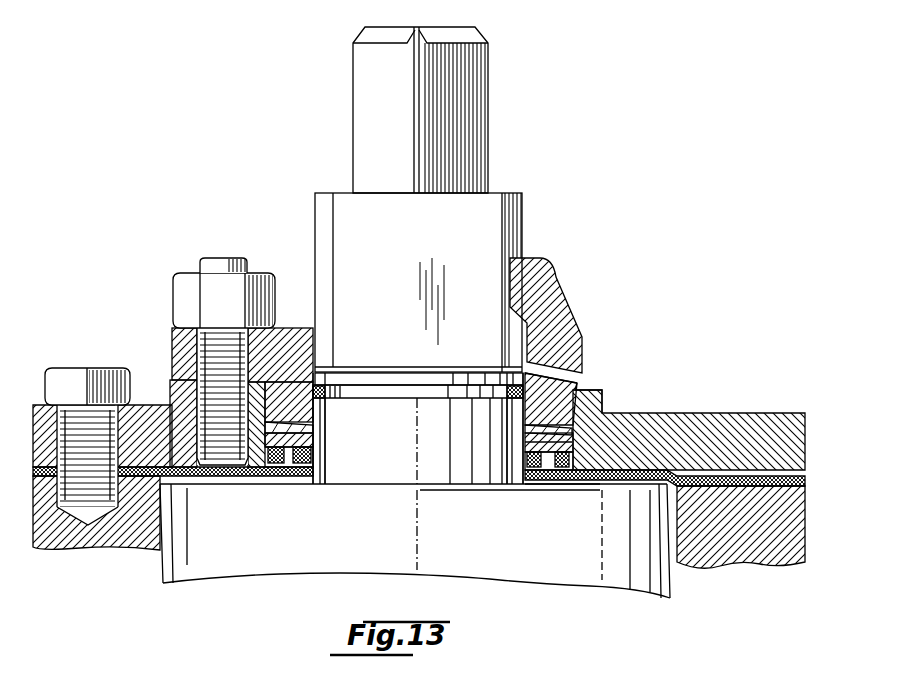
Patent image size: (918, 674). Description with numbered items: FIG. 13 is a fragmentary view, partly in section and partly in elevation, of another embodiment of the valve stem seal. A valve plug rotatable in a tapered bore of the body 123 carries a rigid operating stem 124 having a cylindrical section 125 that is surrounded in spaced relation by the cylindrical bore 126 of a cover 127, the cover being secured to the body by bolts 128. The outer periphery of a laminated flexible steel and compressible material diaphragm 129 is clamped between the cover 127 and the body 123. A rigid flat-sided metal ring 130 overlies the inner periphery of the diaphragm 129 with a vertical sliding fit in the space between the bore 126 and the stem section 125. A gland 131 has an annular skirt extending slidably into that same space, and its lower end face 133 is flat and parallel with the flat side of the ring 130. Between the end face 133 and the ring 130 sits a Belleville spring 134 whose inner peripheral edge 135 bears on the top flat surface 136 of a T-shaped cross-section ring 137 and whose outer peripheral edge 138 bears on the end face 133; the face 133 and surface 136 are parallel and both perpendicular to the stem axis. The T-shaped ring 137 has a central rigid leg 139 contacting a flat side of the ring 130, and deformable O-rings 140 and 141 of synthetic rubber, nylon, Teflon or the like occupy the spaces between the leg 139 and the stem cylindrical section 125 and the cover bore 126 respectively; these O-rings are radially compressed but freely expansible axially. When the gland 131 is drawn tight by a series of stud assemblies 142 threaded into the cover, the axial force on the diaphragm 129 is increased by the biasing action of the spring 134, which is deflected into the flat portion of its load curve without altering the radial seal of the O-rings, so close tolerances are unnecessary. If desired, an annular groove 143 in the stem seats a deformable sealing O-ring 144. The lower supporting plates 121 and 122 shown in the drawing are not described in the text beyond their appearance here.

The base plate 121 is at (191, 570).
The support plate 122 is at (672, 538).
The body 123 is at (753, 548).
The operating stem 124 is at (492, 225).
The cylindrical section 125 is at (440, 425).
The bore 126 is at (603, 397).
The cover 127 is at (683, 423).
The bolts 128 is at (110, 402).
The diaphragm 129 is at (617, 490).
The ring 130 is at (543, 487).
The gland 131 is at (283, 335).
The end face 133 is at (566, 426).
The Belleville spring 134 is at (566, 441).
The inner peripheral edge 135 is at (568, 458).
The top flat surface 136 is at (284, 457).
The T-shaped ring 137 is at (313, 443).
The outer peripheral edge 138 is at (543, 412).
The leg 139 is at (542, 478).
The O-ring 140 is at (276, 468).
The O-ring 141 is at (522, 470).
The stud assemblies 142 is at (232, 289).
The annular groove 143 is at (465, 378).
The sealing O-ring 144 is at (322, 408).